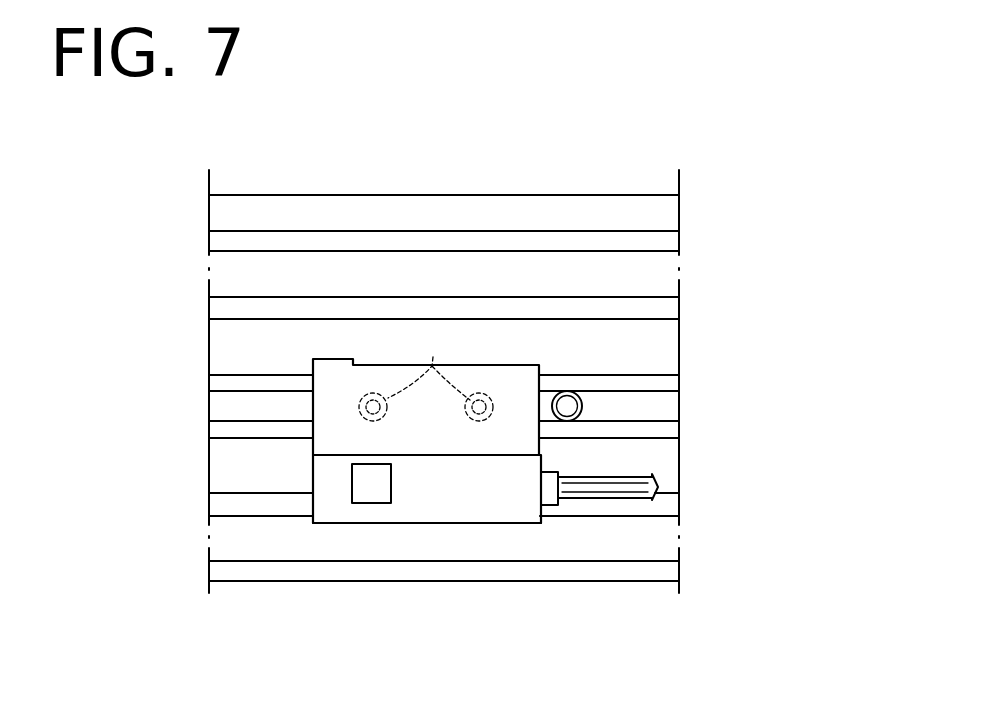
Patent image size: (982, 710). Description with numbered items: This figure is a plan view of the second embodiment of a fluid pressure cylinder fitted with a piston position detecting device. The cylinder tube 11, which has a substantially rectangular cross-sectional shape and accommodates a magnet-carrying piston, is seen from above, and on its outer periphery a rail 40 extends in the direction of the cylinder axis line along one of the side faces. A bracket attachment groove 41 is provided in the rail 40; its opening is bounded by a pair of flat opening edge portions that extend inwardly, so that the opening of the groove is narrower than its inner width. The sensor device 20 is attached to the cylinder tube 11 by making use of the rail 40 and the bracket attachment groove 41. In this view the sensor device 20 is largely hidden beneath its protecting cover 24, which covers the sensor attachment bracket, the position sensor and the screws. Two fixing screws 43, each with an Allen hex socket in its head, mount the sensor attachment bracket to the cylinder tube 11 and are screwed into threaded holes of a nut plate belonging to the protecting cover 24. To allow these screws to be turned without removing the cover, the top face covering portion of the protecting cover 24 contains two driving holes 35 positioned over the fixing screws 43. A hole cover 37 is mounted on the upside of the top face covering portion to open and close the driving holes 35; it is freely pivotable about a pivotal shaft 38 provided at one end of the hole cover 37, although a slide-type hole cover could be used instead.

The cylinder tube 11 is at (627, 200).
The sensor device 20 is at (425, 528).
The protecting cover 24 is at (481, 528).
The driving holes 35 is at (374, 393).
The hole cover 37 is at (527, 372).
The pivotal shaft 38 is at (567, 406).
The rail 40 is at (251, 374).
The bracket attachment groove 41 is at (240, 410).
The fixing screws 43 is at (429, 365).